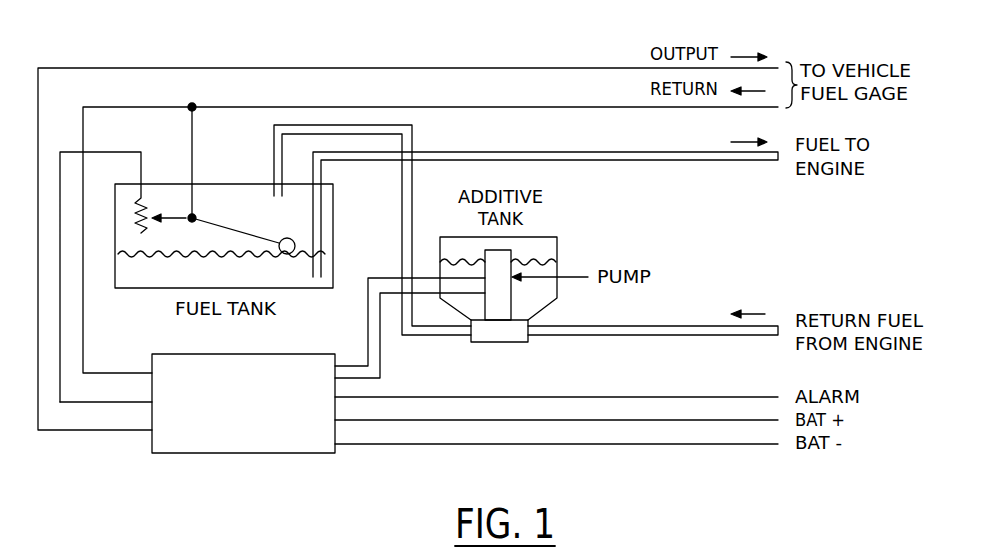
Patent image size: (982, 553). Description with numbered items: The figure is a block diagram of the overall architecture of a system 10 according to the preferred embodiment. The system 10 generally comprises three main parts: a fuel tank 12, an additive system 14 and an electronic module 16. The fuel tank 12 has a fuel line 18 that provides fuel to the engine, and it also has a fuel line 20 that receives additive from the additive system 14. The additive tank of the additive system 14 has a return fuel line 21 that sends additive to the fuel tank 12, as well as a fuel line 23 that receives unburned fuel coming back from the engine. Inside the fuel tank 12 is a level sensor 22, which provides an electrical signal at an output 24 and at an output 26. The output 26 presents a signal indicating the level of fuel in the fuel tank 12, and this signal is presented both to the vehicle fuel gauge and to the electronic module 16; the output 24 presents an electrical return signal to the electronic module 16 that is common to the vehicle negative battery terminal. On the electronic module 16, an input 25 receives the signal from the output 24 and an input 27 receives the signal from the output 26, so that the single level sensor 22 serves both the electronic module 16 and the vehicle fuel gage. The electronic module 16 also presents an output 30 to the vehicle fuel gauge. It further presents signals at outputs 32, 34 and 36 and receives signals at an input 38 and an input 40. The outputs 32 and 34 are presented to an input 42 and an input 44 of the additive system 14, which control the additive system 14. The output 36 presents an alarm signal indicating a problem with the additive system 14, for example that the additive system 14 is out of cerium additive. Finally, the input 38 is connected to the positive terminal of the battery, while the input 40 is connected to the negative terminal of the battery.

The system 10 is at (243, 28).
The fuel tank 12 is at (337, 207).
The additive system 14 is at (592, 224).
The electronic module 16 is at (258, 455).
The fuel line 18 is at (506, 151).
The fuel line 20 is at (333, 124).
The return fuel line 21 is at (467, 341).
The level sensor 22 is at (248, 232).
The fuel line 23 is at (528, 338).
The output 24 is at (196, 168).
The input 25 is at (151, 370).
The output 26 is at (143, 171).
The input 27 is at (150, 398).
The output 30 is at (150, 435).
The output 32 is at (338, 362).
The output 34 is at (337, 373).
The output 36 is at (337, 392).
The input 38 is at (338, 421).
The input 40 is at (343, 453).
The input 42 is at (440, 278).
The input 44 is at (440, 295).